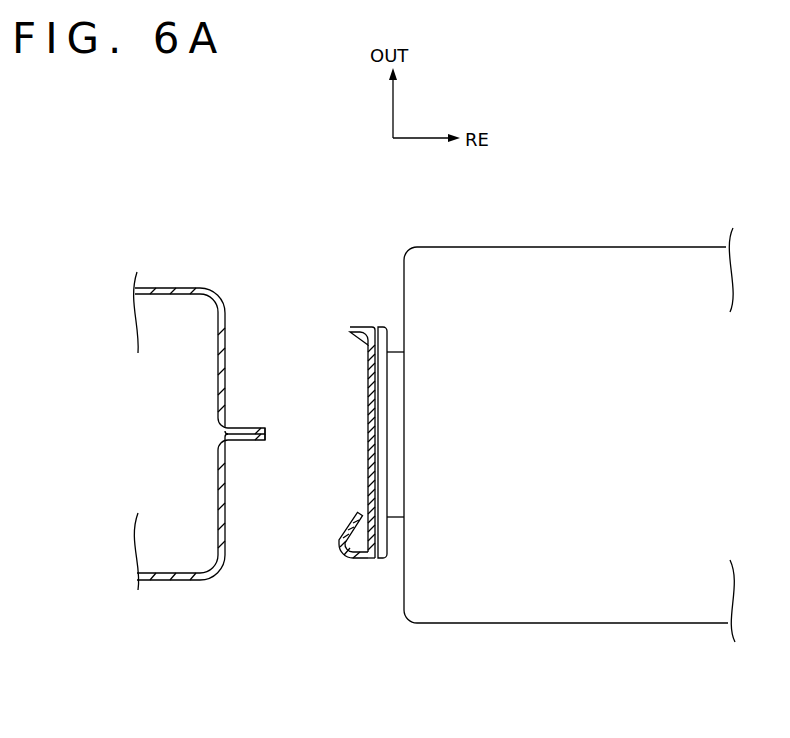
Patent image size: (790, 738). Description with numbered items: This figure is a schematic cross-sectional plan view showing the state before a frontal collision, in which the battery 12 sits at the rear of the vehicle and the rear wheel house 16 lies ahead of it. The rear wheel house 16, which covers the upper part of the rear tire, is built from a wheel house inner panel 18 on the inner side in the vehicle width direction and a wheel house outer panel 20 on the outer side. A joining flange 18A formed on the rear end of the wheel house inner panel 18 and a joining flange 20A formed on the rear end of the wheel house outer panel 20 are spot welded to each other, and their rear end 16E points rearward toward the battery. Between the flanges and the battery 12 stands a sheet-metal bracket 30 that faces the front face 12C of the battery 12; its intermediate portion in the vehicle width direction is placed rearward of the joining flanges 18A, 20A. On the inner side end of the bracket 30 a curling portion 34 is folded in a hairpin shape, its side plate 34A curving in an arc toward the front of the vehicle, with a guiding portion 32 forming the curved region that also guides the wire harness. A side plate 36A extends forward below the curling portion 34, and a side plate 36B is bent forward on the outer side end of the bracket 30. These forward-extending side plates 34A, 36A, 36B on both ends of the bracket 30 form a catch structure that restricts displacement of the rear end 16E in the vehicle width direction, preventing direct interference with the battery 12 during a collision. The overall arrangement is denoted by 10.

The vehicle body structure 10 is at (421, 230).
The battery 12 is at (511, 247).
The front face of the battery 12C is at (401, 328).
The rear wheel house 16 is at (225, 281).
The rear end of the joining flanges 16E is at (268, 433).
The wheel house inner panel 18 is at (177, 583).
The joining flange 18A is at (258, 442).
The wheel house outer panel 20 is at (178, 288).
The joining flange 20A is at (260, 426).
The bracket 30 is at (358, 384).
The guiding portion 32 is at (352, 564).
The curling portion 34 is at (341, 557).
The side plate 34A is at (364, 561).
The side plate 36A is at (380, 561).
The side plate 36B is at (362, 324).